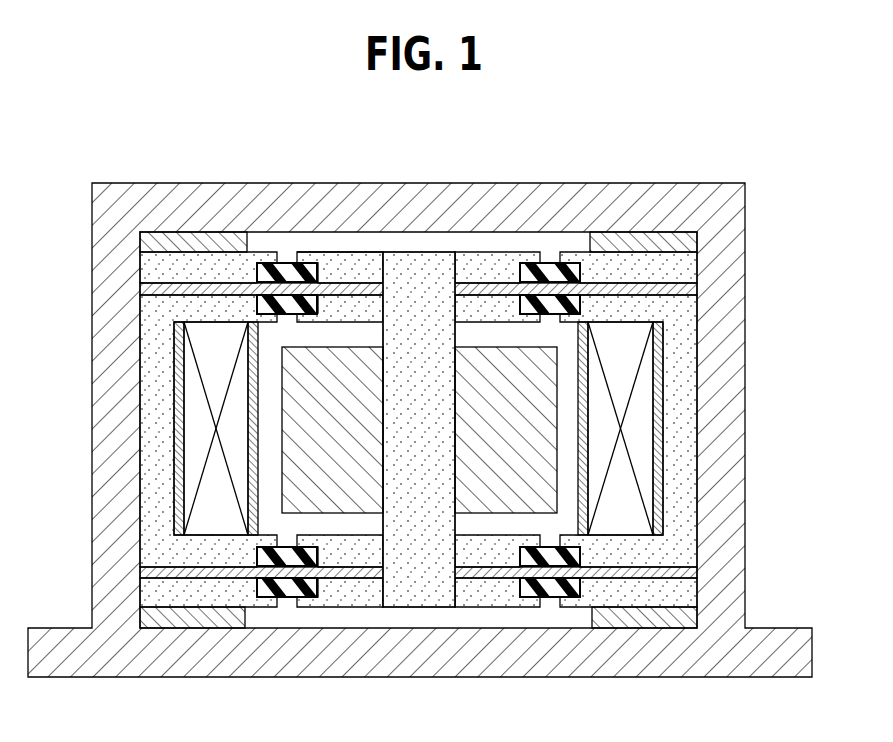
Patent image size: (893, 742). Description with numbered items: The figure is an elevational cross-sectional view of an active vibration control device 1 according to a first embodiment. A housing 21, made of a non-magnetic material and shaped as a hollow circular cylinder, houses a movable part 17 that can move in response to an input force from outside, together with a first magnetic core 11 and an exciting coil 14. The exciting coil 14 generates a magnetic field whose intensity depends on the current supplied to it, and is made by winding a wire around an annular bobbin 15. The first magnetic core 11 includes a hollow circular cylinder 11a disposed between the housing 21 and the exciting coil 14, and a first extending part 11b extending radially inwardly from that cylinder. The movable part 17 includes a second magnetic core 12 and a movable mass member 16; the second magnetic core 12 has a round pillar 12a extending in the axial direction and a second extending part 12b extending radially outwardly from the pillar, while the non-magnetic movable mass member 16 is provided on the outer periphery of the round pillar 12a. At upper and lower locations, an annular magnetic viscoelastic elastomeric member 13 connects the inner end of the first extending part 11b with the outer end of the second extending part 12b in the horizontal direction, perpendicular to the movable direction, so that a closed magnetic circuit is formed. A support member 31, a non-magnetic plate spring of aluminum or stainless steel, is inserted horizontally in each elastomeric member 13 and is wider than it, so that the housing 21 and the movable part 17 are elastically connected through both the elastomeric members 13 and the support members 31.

The active vibration control device 1 is at (782, 160).
The first magnetic core 11 is at (823, 255).
The hollow circular cylinder 11a is at (685, 348).
The first extending part 11b is at (625, 268).
The second magnetic core 12 is at (417, 147).
The round pillar 12a is at (436, 268).
The second extending part 12b is at (499, 262).
The magnetic viscoelastic elastomeric member 13 is at (285, 262).
The exciting coil 14 is at (195, 392).
The bobbin 15 is at (175, 453).
The movable mass member 16 is at (545, 487).
The movable part 17 is at (373, 252).
The housing 21 is at (92, 235).
The support member 31 is at (235, 283).